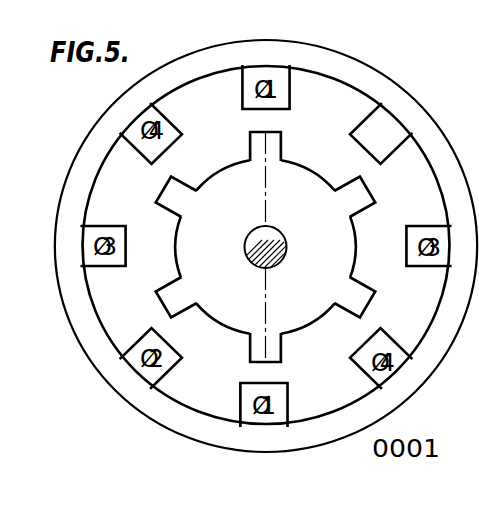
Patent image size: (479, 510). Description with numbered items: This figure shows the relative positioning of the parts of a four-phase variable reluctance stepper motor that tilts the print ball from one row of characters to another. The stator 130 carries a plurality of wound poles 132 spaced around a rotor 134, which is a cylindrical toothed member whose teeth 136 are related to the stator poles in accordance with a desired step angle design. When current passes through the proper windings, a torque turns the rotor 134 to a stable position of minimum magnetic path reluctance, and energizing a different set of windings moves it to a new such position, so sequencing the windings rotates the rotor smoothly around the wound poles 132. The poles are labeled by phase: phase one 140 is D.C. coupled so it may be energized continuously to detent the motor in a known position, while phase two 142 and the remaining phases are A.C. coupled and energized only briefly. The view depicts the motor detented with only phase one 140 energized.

The stator 130 is at (360, 69).
The wound poles 132 is at (364, 147).
The rotor 134 is at (315, 285).
The teeth 136 is at (363, 303).
The phase one (ϕ1) 140 is at (270, 108).
The phase two (ϕ2) 142 is at (402, 128).